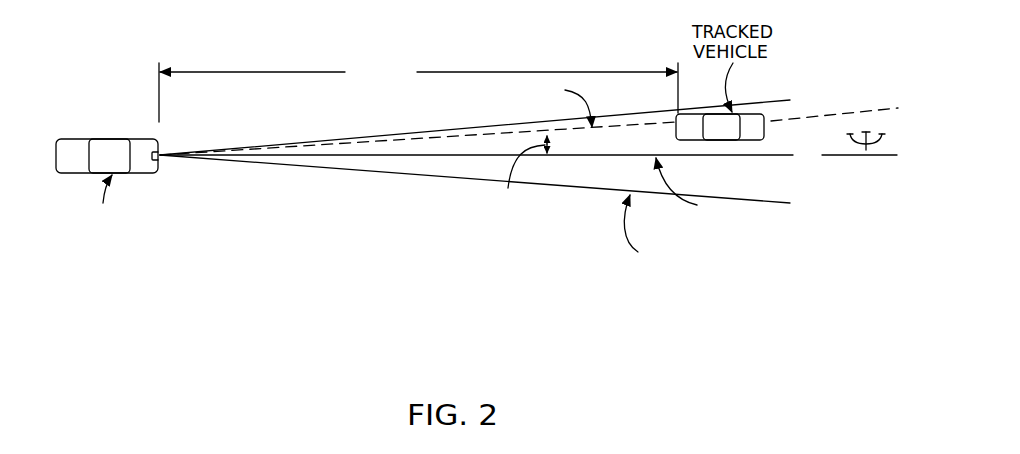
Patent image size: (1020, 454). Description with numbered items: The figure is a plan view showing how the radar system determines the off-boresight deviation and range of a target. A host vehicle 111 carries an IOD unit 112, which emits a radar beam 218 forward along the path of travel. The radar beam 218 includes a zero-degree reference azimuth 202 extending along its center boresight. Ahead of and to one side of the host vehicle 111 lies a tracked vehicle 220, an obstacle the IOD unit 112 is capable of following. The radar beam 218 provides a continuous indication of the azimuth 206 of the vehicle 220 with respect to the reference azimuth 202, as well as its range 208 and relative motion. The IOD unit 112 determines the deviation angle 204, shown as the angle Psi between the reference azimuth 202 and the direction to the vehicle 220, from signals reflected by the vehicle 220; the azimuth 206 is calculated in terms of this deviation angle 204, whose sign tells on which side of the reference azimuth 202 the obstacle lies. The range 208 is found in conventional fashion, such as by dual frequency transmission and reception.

The host vehicle 111 is at (74, 138).
The IOD unit 112 is at (161, 151).
The zero-degree reference azimuth 202 is at (763, 158).
The deviation angle 204 is at (496, 196).
The azimuth 206 is at (535, 104).
The range 208 is at (418, 92).
The radar beam 218 is at (772, 100).
The vehicle 220 is at (768, 123).